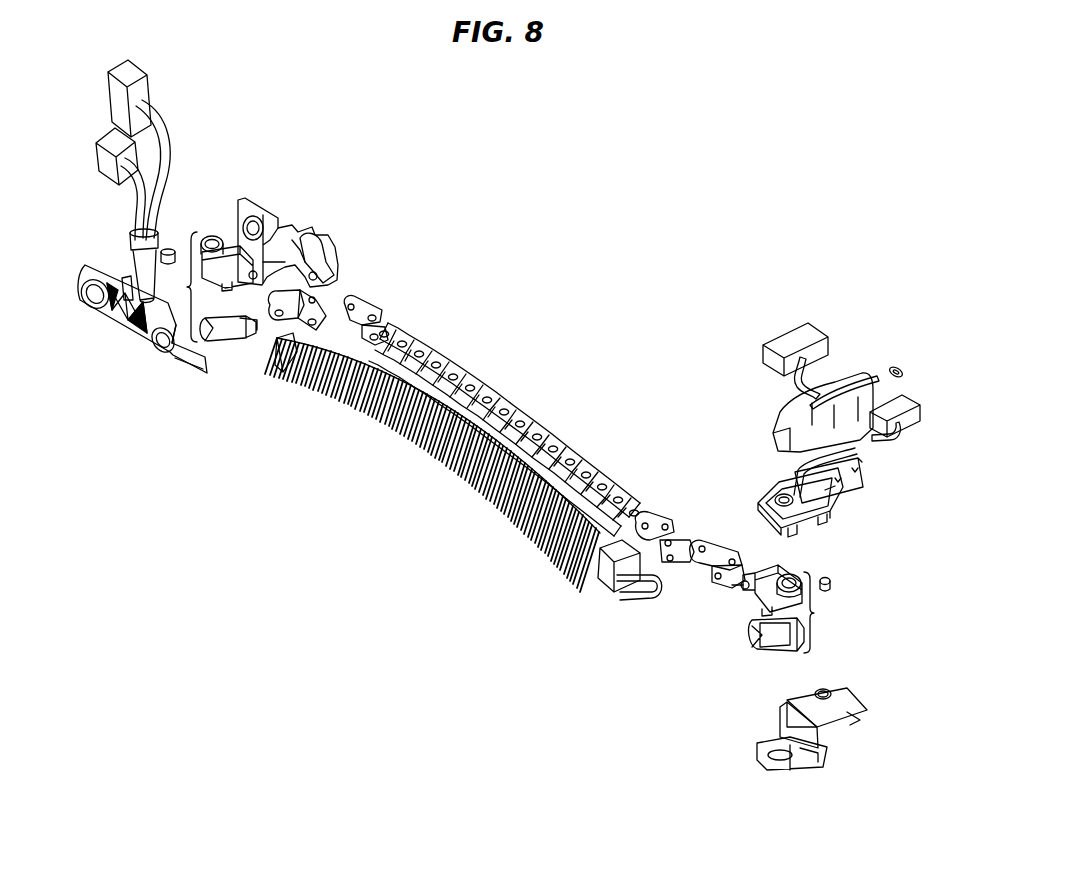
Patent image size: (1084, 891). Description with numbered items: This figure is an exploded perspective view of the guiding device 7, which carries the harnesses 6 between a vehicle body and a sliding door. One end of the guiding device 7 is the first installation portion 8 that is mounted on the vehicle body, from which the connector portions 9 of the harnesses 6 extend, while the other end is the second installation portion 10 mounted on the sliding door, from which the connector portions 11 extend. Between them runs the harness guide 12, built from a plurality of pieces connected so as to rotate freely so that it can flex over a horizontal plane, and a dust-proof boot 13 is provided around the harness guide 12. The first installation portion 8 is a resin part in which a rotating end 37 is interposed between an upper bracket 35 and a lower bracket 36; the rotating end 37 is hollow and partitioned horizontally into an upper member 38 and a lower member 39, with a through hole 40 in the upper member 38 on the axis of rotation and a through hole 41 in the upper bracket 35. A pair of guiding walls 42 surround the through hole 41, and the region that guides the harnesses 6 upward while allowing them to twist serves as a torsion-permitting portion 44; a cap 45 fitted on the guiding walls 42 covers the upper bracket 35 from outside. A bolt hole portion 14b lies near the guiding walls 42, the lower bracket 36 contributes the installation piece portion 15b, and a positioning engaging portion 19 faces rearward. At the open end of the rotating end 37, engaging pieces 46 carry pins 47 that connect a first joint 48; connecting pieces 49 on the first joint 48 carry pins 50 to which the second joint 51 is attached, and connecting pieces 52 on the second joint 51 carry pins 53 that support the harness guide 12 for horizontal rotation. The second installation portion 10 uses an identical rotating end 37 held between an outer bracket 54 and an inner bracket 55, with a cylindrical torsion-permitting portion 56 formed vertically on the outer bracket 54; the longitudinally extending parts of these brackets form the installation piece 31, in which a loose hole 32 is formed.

The harness 6 is at (133, 168).
The guiding device 7 is at (511, 393).
The first installation portion 8 is at (720, 455).
The connector portion 9 is at (781, 342).
The second installation portion 10 is at (208, 200).
The connector portion 11 is at (95, 142).
The harness guide 12 is at (550, 420).
The dust-proof boot 13 is at (455, 476).
The bolt hole portion 14b is at (827, 690).
The installation piece portion 15b is at (847, 703).
The positioning engaging portion 19 is at (760, 750).
The installation piece 31 is at (83, 272).
The loose hole 32 is at (96, 310).
The upper bracket 35 is at (853, 500).
The lower bracket 36 is at (790, 703).
The rotating end 37 is at (504, 442).
The upper member 38 is at (213, 280).
The lower member 39 is at (212, 343).
The through hole 40 is at (208, 240).
The through hole 41 is at (778, 497).
The guiding wall 42 is at (792, 480).
The torsion-permitting portion 44 is at (826, 491).
The cap 45 is at (793, 413).
The engaging piece 46 is at (254, 273).
The pin 47 is at (251, 267).
The first joint 48 is at (280, 333).
The connecting piece 49 is at (330, 312).
The pin 50 is at (315, 300).
The second joint 51 is at (338, 343).
The connecting piece 52 is at (387, 317).
The pin 53 is at (373, 313).
The outer bracket 54 is at (82, 292).
The inner bracket 55 is at (325, 237).
The torsion-permitting portion 56 is at (123, 267).